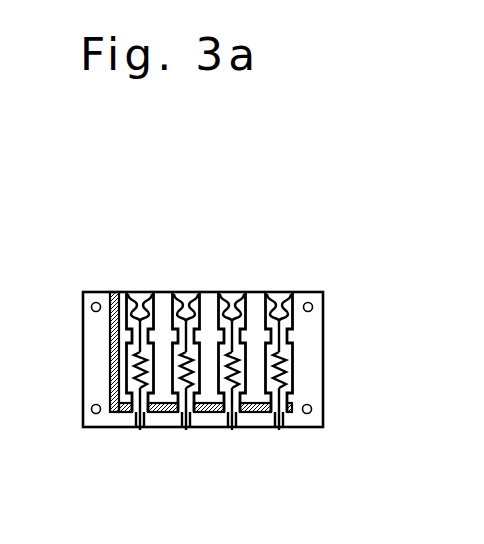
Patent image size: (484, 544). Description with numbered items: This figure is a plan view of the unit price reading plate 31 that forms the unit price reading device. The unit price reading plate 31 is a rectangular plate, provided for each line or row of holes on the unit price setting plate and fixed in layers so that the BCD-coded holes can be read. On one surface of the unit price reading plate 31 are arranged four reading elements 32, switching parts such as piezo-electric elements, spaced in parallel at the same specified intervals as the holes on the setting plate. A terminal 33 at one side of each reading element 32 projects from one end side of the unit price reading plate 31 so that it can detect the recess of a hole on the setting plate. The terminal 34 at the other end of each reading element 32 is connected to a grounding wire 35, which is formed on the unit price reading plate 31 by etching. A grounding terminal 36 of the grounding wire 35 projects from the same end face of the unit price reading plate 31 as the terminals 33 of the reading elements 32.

The unit price reading plate 31 is at (326, 325).
The reading element 32 is at (158, 300).
The terminal 33 is at (142, 296).
The terminal 34 is at (139, 430).
The grounding wire 35 is at (112, 428).
The grounding terminal 36 is at (114, 290).